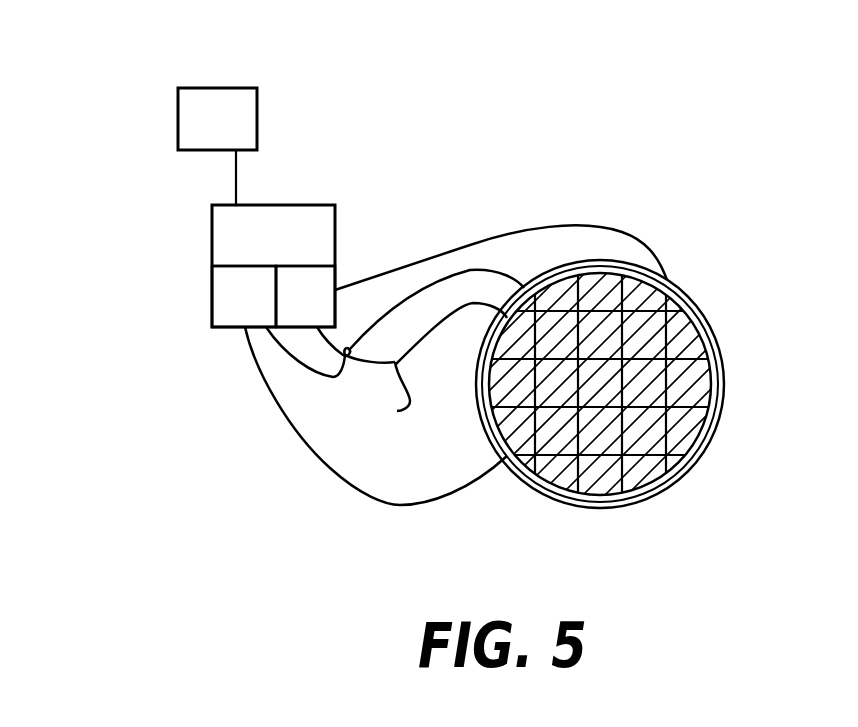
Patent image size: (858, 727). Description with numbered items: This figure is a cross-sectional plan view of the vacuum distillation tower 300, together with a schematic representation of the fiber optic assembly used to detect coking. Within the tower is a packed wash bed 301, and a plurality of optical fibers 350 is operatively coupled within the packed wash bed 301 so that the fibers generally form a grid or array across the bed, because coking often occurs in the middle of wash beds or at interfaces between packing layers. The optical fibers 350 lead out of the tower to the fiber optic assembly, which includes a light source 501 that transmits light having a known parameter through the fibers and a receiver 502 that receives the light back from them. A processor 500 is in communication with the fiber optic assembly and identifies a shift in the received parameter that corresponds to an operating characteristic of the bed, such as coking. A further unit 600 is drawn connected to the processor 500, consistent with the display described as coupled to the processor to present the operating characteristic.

The display unit 600 is at (257, 103).
The processor 500 is at (298, 205).
The light source 501 is at (212, 296).
The receiver 502 is at (335, 271).
The optical fibers 350 is at (462, 273).
The vacuum distillation tower 300 is at (593, 350).
The packed wash bed 301 is at (638, 298).